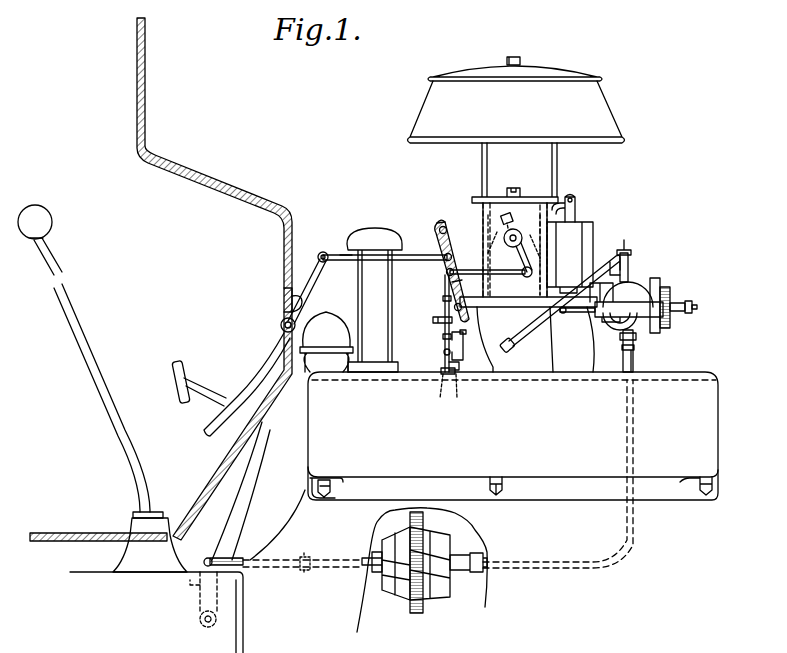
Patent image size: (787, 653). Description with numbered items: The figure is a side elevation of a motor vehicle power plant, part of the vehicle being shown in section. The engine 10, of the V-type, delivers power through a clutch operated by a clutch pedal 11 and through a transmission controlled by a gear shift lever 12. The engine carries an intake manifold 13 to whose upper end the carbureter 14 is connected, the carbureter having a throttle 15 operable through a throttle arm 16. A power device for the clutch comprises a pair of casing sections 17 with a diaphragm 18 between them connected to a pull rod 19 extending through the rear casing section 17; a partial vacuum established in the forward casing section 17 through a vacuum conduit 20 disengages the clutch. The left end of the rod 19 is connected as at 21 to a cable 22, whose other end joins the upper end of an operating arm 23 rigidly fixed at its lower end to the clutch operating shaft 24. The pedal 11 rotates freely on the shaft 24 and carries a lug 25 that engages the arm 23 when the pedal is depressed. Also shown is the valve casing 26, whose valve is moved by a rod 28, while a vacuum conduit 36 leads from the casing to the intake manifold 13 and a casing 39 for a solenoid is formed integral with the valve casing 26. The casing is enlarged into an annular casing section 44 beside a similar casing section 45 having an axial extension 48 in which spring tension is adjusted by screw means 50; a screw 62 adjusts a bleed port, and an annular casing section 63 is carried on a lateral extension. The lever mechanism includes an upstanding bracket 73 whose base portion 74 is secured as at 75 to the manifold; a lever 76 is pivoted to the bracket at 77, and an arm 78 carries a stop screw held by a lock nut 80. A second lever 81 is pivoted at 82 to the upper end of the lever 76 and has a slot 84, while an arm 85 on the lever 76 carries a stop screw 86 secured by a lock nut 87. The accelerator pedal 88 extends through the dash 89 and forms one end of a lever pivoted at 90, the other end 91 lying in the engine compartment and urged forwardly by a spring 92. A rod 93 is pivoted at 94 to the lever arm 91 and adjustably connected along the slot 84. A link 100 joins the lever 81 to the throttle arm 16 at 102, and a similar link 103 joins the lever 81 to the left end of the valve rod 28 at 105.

The motor vehicle engine 10 is at (722, 378).
The clutch pedal 11 is at (250, 450).
The gear shift lever 12 is at (138, 478).
The intake manifold 13 is at (525, 378).
The carbureter 14 is at (595, 236).
The throttle 15 is at (566, 197).
The throttle arm 16 is at (500, 246).
The casing sections 17 is at (470, 537).
The diaphragm 18 is at (395, 526).
The pull rod 19 is at (365, 575).
The vacuum conduit 20 is at (560, 562).
The connection 21 is at (304, 573).
The cable 22 is at (233, 556).
The operating arm 23 is at (190, 585).
The clutch operating shaft 24 is at (200, 621).
The lug 25 is at (203, 560).
The valve casing 26 is at (638, 337).
The valve rod 28 is at (612, 328).
The vacuum conduit 36 is at (635, 284).
The casing 39 is at (607, 260).
The annular casing section 44 is at (655, 290).
The annular casing section 45 is at (674, 303).
The axial extension 48 is at (696, 309).
The screw means 50 is at (694, 306).
The screw 62 is at (656, 280).
The annular casing section 63 is at (630, 280).
The upstanding bracket 73 is at (441, 370).
The base portion 74 is at (440, 398).
The securing means 75 is at (462, 394).
The lever 76 is at (443, 286).
The pivot bolt 77 is at (444, 352).
The arm 78 is at (463, 364).
The lock nut 80 is at (464, 345).
The second lever 81 is at (449, 236).
The pivot bolt 82 is at (440, 226).
The slot 84 is at (458, 285).
The arm 85 is at (443, 300).
The stop screw 86 is at (433, 320).
The lock nut 87 is at (443, 337).
The accelerator pedal 88 is at (262, 378).
The vehicle dash 89 is at (280, 287).
The pivot 90 is at (280, 325).
The lever arm 91 is at (312, 272).
The spring 92 is at (292, 300).
The rod 93 is at (345, 261).
The pivotal connection 94 is at (342, 253).
The link 100 is at (495, 268).
The pivotal connection 102 is at (514, 269).
The link 103 is at (508, 352).
The pivotal connection 105 is at (572, 312).